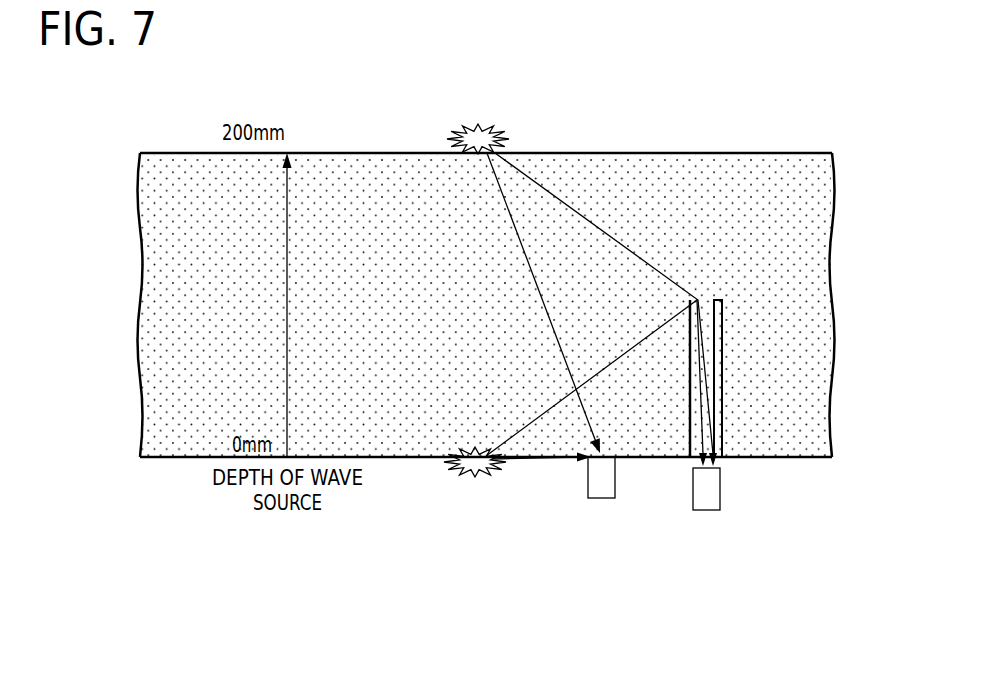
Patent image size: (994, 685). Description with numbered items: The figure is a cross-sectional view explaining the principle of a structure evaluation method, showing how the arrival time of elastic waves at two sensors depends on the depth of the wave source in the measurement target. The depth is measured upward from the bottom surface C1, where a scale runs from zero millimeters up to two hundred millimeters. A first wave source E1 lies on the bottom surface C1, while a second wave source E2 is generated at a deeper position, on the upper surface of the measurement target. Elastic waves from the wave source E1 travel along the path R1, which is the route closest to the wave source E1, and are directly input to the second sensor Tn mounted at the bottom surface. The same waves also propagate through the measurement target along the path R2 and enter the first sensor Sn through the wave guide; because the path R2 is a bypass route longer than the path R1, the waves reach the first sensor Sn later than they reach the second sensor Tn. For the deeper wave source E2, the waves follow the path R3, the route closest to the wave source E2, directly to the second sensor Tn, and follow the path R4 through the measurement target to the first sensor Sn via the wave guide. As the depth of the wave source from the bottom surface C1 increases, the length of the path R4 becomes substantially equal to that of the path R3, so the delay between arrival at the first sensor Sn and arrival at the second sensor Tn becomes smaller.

The bottom surface C1 is at (181, 460).
The wave source E1 is at (475, 481).
The wave source E2 is at (478, 122).
The path R1 is at (545, 462).
The path R2 is at (632, 347).
The path R3 is at (535, 276).
The path R4 is at (598, 220).
The second sensor Tn is at (602, 478).
The first sensor Sn is at (707, 488).